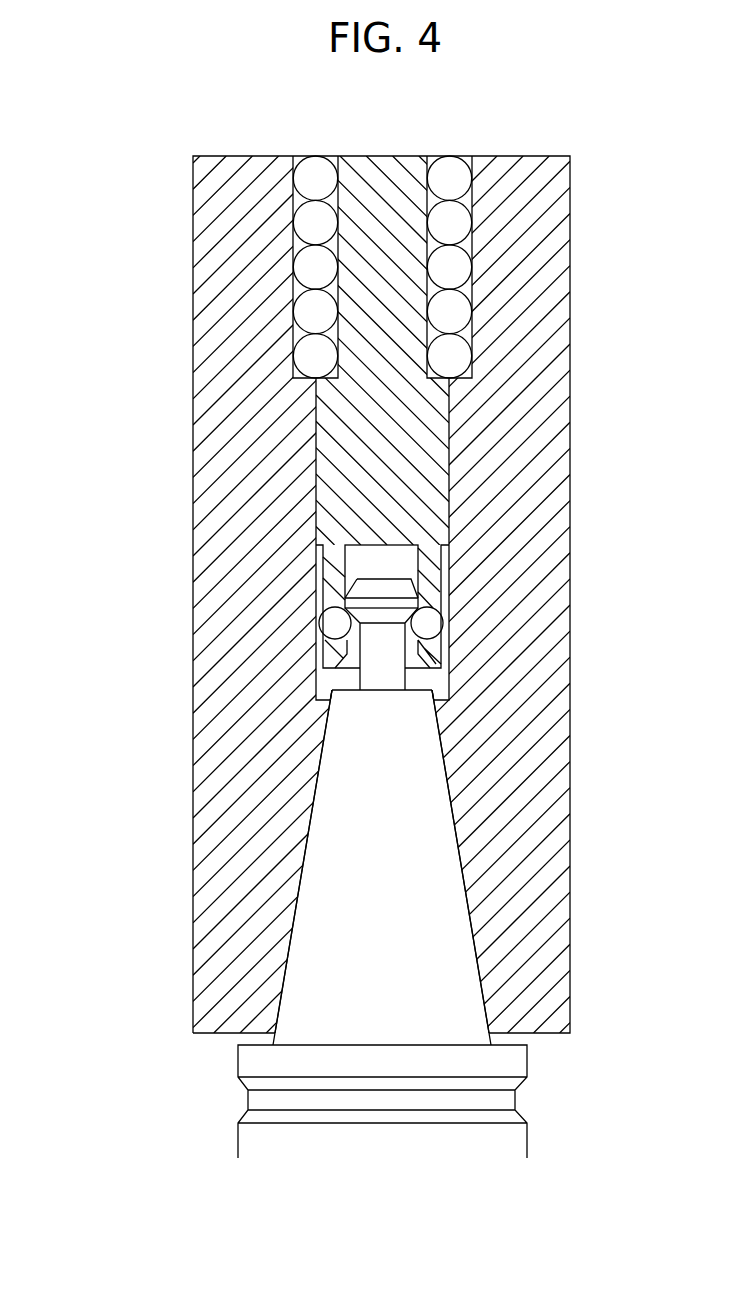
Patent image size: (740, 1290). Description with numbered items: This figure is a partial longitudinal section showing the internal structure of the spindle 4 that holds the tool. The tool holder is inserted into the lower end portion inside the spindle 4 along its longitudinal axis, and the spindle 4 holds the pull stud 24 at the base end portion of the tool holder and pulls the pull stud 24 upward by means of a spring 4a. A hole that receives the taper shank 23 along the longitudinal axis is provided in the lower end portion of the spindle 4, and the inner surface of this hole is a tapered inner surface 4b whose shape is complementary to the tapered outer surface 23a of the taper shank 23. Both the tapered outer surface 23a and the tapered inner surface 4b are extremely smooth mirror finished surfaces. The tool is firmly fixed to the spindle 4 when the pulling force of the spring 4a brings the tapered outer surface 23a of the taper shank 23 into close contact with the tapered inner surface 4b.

The spindle 4 is at (128, 234).
The spring 4a is at (488, 204).
The tapered inner surface 4b is at (307, 858).
The taper shank 23 is at (436, 924).
The tapered outer surface 23a is at (455, 810).
The pull stud 24 is at (410, 585).